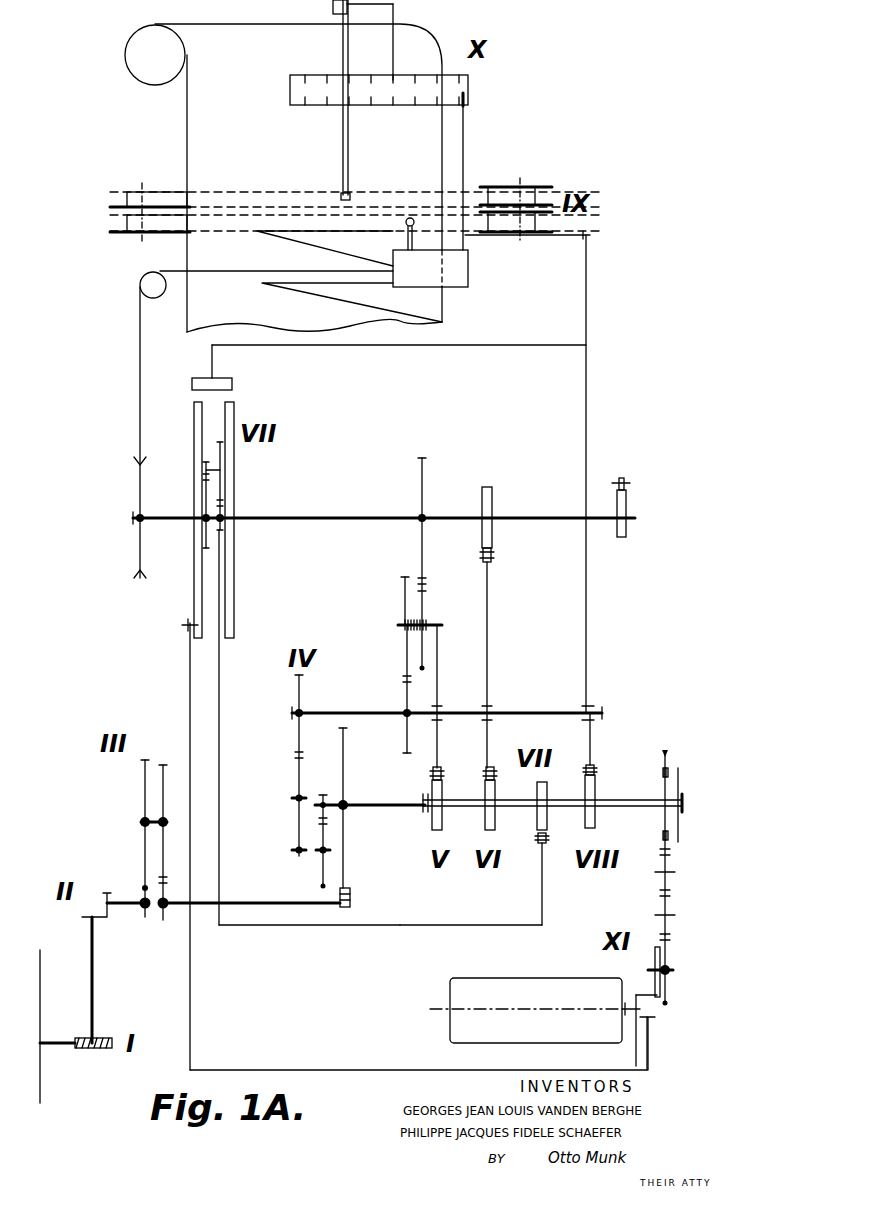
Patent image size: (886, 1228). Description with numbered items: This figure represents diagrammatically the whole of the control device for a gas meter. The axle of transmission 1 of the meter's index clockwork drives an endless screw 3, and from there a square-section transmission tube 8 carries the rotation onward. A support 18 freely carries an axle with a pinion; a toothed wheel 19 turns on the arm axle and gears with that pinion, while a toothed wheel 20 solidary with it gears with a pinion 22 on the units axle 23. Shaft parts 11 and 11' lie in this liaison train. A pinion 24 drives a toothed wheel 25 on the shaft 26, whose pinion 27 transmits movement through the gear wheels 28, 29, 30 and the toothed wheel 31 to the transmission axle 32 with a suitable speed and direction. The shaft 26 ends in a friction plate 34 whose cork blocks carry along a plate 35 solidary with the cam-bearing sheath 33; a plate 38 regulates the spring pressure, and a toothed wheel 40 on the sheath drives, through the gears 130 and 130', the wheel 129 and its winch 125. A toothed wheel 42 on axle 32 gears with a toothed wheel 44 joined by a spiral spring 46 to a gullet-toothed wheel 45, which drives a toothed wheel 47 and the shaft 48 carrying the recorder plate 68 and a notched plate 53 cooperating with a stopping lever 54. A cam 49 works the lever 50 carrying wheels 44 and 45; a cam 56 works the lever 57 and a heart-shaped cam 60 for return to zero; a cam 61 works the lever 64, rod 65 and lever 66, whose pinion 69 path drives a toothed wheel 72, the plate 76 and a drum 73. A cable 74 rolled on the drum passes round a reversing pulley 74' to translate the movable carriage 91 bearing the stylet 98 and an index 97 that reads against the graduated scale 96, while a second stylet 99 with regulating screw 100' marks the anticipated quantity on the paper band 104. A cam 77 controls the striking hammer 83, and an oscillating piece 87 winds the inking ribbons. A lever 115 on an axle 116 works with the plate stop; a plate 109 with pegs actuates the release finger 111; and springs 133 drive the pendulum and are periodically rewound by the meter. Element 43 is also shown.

The axle of transmission of the index clockwork 1 is at (58, 1042).
The endless screw 3 is at (104, 1037).
The transmission tube 8 is at (94, 971).
The shaft 11 is at (73, 930).
The shaft 11' is at (115, 895).
The support 18 is at (140, 908).
The toothed wheel 19 is at (140, 838).
The toothed wheel 20 is at (165, 849).
The pinion 22 is at (163, 923).
The axle 23 is at (279, 900).
The pinion 24 is at (351, 898).
The toothed wheel 25 is at (345, 842).
The shaft 26 is at (349, 805).
The pinion 27 is at (322, 795).
The gear wheel 28 is at (321, 872).
The gear wheel 29 is at (295, 848).
The gear wheel 30 is at (295, 809).
The toothed wheel 31 is at (297, 689).
The transmission axle 32 is at (349, 712).
The cam-bearing sheath 33 is at (460, 799).
The friction plate 34 is at (680, 838).
The plate 35 is at (667, 768).
The plate 38 is at (683, 795).
The toothed wheel 40 is at (654, 744).
The toothed wheel 42 is at (405, 742).
The gear 43 is at (441, 624).
The toothed wheel 44 is at (403, 592).
The gullet-toothed gear wheel 45 is at (427, 596).
The spiral spring 46 is at (405, 640).
The toothed wheel 47 is at (420, 541).
The shaft 48 is at (350, 510).
The cam 49 is at (430, 790).
The lever 50 is at (438, 673).
The notched plate 53 is at (627, 525).
The stopping lever 54 is at (625, 480).
The cam 56 is at (493, 794).
The lever 57 is at (490, 595).
The heart-shaped cam 60 is at (489, 500).
The cam 61 is at (546, 794).
The lever 64 is at (432, 918).
The rod 65 is at (332, 914).
The lever 66 is at (471, 914).
The recorder plate 68 is at (235, 406).
The pinion 69 is at (223, 530).
The toothed wheel 72 is at (205, 531).
The drum 73 is at (138, 480).
The cable 74 is at (123, 432).
The reversing pulley 74' is at (248, 284).
The recorder plate 76 is at (193, 408).
The cam 77 is at (595, 790).
The striking hammer 83 is at (200, 377).
The oscillating piece 87 is at (548, 238).
The movable carriage 91 is at (470, 267).
The graduated scale 96 is at (470, 80).
The index 97 is at (466, 157).
The stylet 98 is at (409, 216).
The stylet 99 is at (342, 190).
The rod 100' is at (329, 40).
The paper band 104 is at (190, 119).
The plate 109 is at (633, 1016).
The release finger 111 is at (638, 1050).
The lever 115 is at (189, 679).
The axle 116 is at (199, 1068).
The winch 125 is at (654, 961).
The toothed wheel 129 is at (667, 965).
The gear 130 is at (677, 917).
The gear 130' is at (679, 887).
The springs 133 is at (535, 1010).